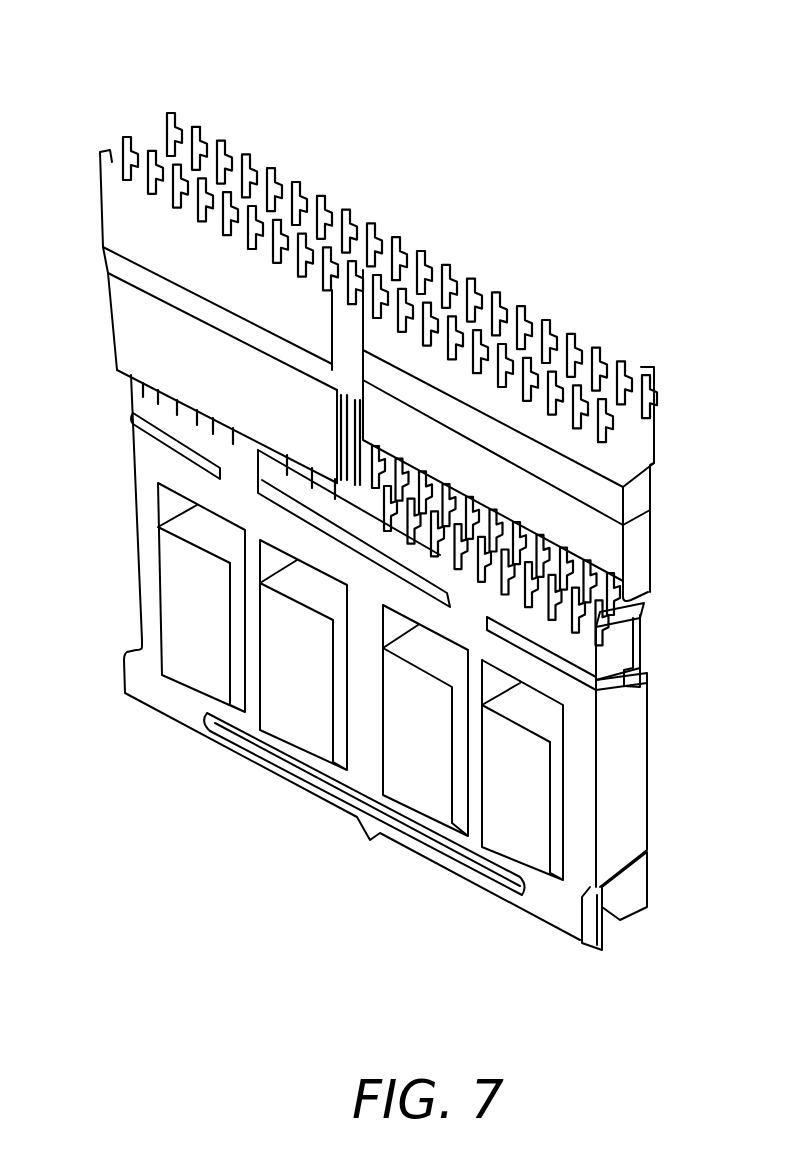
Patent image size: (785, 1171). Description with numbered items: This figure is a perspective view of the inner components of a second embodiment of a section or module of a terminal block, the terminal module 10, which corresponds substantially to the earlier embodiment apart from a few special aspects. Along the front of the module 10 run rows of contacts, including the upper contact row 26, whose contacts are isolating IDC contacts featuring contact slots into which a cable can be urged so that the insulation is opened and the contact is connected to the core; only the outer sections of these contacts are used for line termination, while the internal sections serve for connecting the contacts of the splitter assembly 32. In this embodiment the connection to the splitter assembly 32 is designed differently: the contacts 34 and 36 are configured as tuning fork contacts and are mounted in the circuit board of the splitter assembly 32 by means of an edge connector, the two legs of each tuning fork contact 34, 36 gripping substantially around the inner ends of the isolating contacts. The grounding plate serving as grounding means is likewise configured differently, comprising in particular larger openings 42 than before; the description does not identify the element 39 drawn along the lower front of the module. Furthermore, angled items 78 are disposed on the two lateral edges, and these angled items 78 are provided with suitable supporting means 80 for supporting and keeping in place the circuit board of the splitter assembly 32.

The terminal module 10 is at (363, 508).
The upper contact row 26 is at (620, 647).
The splitter assembly 32 is at (622, 897).
The tuning fork contact 34 is at (617, 601).
The tuning fork contact 36 is at (597, 608).
The guide rail 39 is at (537, 910).
The openings 42 is at (563, 723).
The angled items 78 is at (632, 786).
The supporting means 80 is at (640, 680).